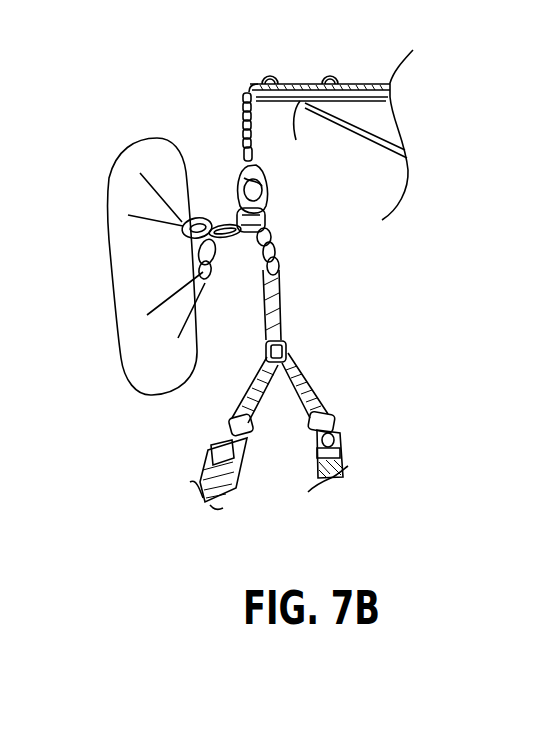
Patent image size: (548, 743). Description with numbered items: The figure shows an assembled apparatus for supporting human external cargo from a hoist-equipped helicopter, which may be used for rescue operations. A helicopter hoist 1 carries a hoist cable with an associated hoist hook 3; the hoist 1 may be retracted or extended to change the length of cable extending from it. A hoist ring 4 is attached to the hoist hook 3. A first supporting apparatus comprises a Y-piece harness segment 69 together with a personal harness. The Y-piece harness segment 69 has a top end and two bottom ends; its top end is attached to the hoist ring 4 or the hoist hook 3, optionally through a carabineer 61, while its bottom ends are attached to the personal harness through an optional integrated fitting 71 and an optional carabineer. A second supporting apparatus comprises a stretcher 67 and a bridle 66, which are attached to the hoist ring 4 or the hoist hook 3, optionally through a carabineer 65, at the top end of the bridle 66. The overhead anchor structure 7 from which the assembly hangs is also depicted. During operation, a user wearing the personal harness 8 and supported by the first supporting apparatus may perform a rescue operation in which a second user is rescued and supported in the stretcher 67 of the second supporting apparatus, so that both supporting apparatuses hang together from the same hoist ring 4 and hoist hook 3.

The helicopter hoist 1 is at (302, 132).
The hoist hook 3 is at (238, 174).
The hoist ring 4 is at (278, 208).
The overhead rail 7 is at (360, 80).
The user wearing the personal harness 8 is at (347, 462).
The carabineer 61 is at (278, 239).
The carabineer 65 is at (235, 238).
The bridle 66 is at (212, 262).
The stretcher 67 is at (123, 357).
The Y-piece harness segment 69 is at (282, 323).
The integrated fitting 71 is at (343, 424).